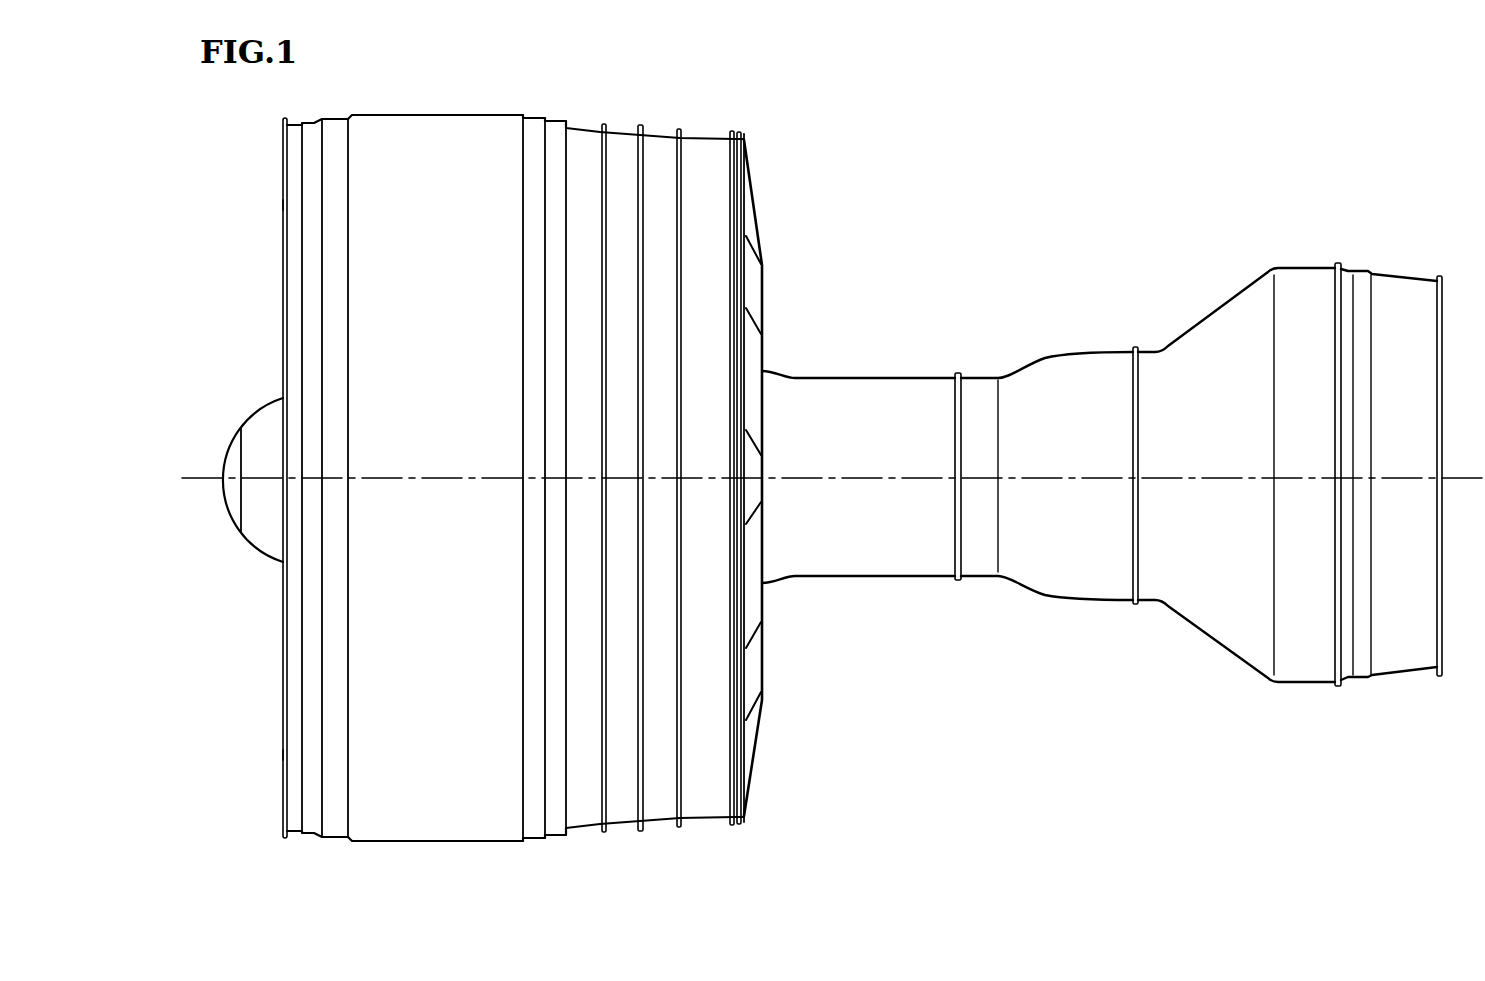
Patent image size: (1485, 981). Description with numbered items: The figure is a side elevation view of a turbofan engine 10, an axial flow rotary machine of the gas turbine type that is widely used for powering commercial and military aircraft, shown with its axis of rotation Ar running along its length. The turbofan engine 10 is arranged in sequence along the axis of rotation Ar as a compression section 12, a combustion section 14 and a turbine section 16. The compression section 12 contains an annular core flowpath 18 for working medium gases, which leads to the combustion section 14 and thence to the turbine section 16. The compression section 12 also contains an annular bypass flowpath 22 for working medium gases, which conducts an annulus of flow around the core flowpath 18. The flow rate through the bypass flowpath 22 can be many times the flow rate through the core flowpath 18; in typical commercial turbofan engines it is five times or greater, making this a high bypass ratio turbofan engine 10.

The turbofan engine 10 is at (1305, 150).
The compression section 12 is at (285, 93).
The combustion section 14 is at (953, 245).
The turbine section 16 is at (1142, 245).
The annular core flowpath 18 is at (252, 352).
The annular bypass flowpath 22 is at (252, 205).
The axis of rotation Ar is at (190, 478).